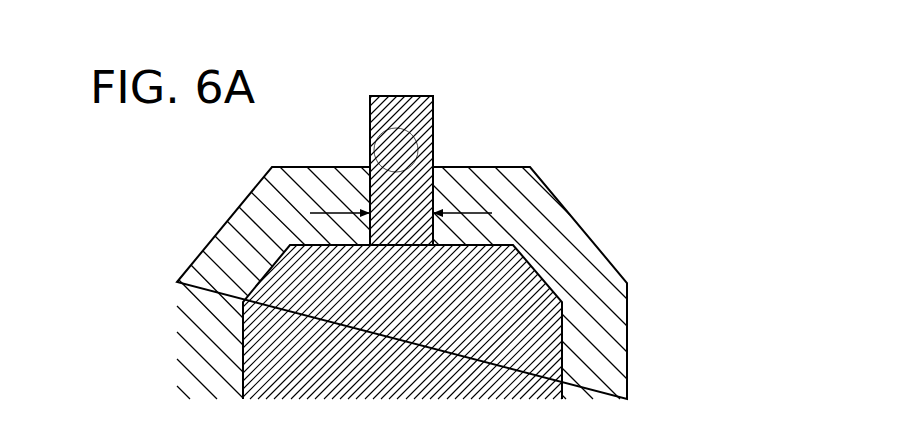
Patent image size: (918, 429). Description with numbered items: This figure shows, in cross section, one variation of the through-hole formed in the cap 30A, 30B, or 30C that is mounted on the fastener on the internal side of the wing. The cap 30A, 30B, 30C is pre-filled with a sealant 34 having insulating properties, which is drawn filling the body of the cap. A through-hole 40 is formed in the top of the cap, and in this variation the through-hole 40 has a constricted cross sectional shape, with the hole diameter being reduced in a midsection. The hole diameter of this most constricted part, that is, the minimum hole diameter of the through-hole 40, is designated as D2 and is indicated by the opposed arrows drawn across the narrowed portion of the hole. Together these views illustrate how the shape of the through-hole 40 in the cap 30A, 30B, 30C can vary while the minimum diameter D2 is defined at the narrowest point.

The cap 30A is at (496, 247).
The cap 30B is at (496, 247).
The cap 30C is at (600, 250).
The sealant 34 is at (433, 108).
The through-hole 40 is at (410, 132).
The minimum hole diameter D2 is at (510, 183).